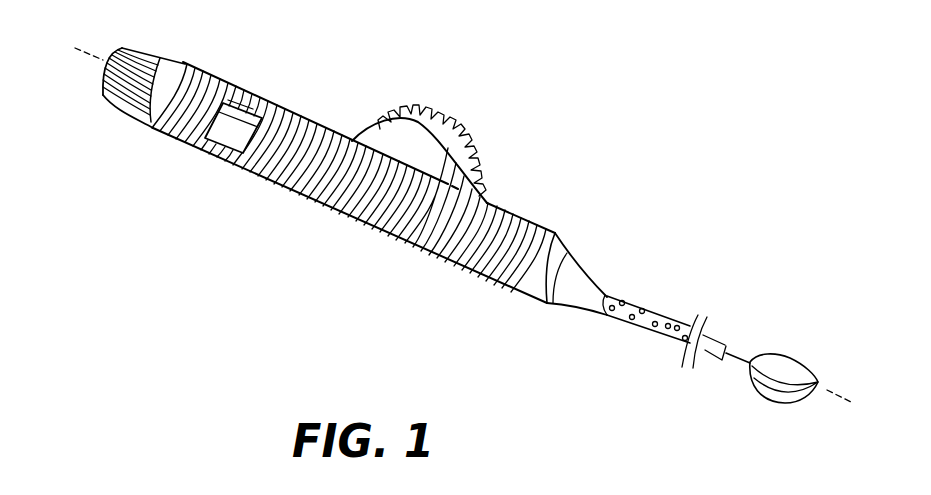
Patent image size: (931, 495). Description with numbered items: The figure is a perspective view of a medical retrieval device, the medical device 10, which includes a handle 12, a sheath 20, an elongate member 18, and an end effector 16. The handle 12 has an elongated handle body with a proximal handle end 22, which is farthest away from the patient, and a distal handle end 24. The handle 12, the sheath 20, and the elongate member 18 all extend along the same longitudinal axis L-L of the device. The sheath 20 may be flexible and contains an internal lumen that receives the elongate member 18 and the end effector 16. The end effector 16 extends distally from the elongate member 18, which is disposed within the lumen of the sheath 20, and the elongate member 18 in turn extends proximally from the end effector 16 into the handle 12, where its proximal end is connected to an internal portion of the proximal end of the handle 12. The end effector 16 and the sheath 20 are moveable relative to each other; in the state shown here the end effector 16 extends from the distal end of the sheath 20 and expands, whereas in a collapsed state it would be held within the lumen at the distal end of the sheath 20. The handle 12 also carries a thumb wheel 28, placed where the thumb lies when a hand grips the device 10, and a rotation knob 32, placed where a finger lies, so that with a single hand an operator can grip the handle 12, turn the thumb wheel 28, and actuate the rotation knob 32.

The medical device 10 is at (330, 252).
The handle 12 is at (311, 112).
The end effector 16 is at (807, 368).
The elongate member 18 is at (738, 365).
The sheath 20 is at (640, 323).
The proximal handle end 22 is at (103, 93).
The distal handle end 24 is at (555, 233).
The thumb wheel 28 is at (443, 110).
The rotation knob 32 is at (226, 137).